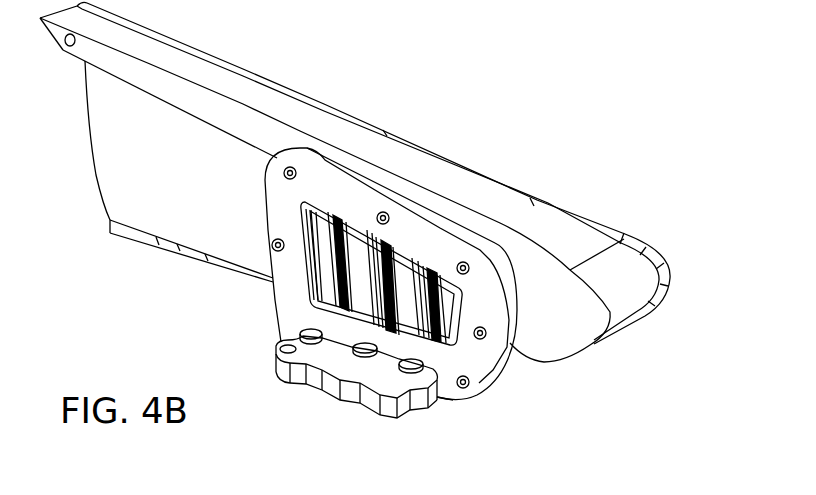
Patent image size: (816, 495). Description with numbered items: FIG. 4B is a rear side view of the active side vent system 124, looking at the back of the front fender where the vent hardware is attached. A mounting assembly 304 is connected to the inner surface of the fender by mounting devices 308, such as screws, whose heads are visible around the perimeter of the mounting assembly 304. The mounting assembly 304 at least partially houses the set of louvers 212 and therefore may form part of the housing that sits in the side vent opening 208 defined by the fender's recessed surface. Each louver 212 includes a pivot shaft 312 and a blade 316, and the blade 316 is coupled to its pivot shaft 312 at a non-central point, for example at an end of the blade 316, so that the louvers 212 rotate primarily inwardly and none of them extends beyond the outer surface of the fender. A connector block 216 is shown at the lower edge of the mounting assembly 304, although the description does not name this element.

The active side vent system 124 is at (299, 424).
The side vent opening 208 is at (398, 277).
The louvers 212 is at (447, 371).
The connector block 216 is at (337, 386).
The mounting assembly 304 is at (281, 312).
The mounting devices 308 is at (273, 251).
The pivot shaft 312 is at (408, 267).
The blade 316 is at (440, 278).